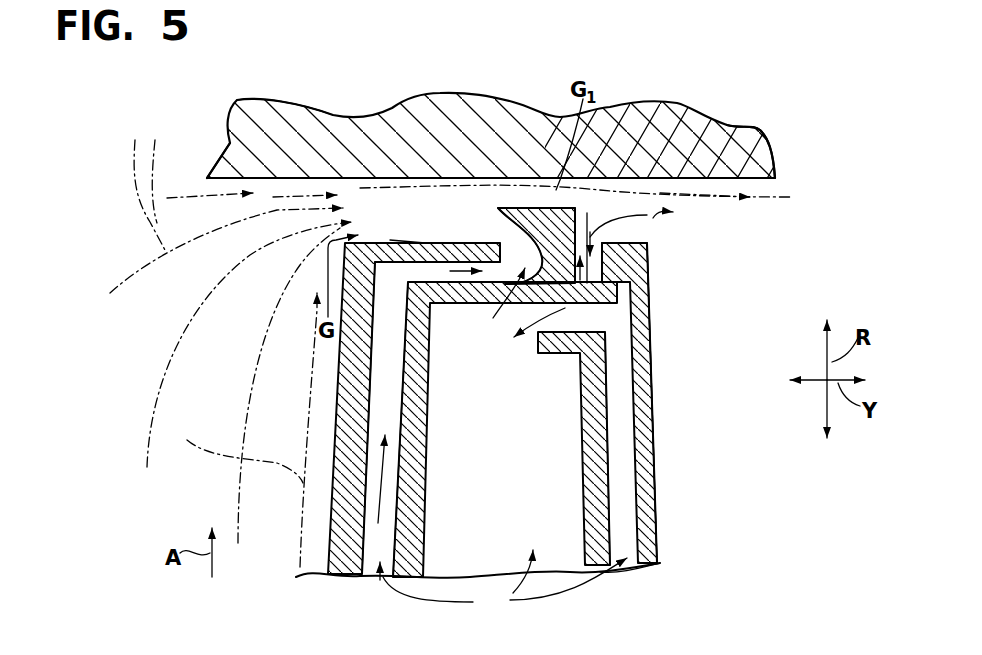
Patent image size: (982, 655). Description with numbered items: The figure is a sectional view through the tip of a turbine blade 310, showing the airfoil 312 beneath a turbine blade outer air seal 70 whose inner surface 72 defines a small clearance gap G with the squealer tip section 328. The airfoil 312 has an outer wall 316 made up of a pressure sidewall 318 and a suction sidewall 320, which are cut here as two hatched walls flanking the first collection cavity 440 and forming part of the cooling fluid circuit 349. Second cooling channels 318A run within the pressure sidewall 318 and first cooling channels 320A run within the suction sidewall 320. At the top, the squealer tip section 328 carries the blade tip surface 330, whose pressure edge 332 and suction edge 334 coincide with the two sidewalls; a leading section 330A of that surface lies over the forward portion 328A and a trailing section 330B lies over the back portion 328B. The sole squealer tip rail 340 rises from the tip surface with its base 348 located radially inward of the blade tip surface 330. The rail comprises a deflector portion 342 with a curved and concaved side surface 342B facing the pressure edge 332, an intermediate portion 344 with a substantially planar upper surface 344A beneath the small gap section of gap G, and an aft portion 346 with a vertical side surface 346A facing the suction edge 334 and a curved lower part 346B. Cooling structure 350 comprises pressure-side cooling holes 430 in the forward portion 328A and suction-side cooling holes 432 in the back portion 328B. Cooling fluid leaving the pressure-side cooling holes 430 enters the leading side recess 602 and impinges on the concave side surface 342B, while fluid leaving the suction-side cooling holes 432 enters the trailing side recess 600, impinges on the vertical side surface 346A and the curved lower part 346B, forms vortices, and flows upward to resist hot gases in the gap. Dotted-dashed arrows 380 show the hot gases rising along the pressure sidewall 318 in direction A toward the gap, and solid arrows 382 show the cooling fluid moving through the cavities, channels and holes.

The turbine blade outer air seal 70 is at (263, 127).
The inner surface of outer air seal 72 is at (227, 180).
The turbine blade 310 is at (660, 487).
The airfoil 312 is at (660, 455).
The outer wall 316 is at (327, 573).
The pressure sidewall 318 is at (328, 533).
The second cooling channels 318A is at (393, 556).
The suction sidewall 320 is at (655, 565).
The first cooling channels 320A is at (652, 563).
The squealer tip section 328 is at (465, 200).
The forward portion of squealer tip section 328A is at (350, 130).
The back portion of squealer tip section 328B is at (647, 238).
The blade tip surface 330 is at (428, 243).
The leading section of blade tip surface 330A is at (390, 240).
The trailing section of blade tip surface 330B is at (647, 277).
The pressure edge 332 is at (370, 313).
The suction edge 334 is at (647, 260).
The squealer tip rail 340 is at (577, 200).
The deflector portion 342 is at (523, 202).
The curved and concaved side surface 342B is at (502, 200).
The intermediate portion 344 is at (550, 195).
The upper surface 344A is at (590, 205).
The aft portion 346 is at (582, 212).
The vertical side surface 346A is at (605, 225).
The curved lower part 346B is at (653, 362).
The base of tip rail 348 is at (647, 393).
The cooling fluid circuit 349 is at (505, 581).
The cooling structure 350 is at (507, 256).
The hot gases 380 is at (238, 435).
The cooling fluid arrows 382 is at (768, 222).
The pressure-side cooling holes 430 is at (418, 305).
The suction-side cooling holes 432 is at (647, 283).
The first collection cavity 440 is at (548, 477).
The trailing side recess 600 is at (643, 177).
The leading side recess 602 is at (533, 313).